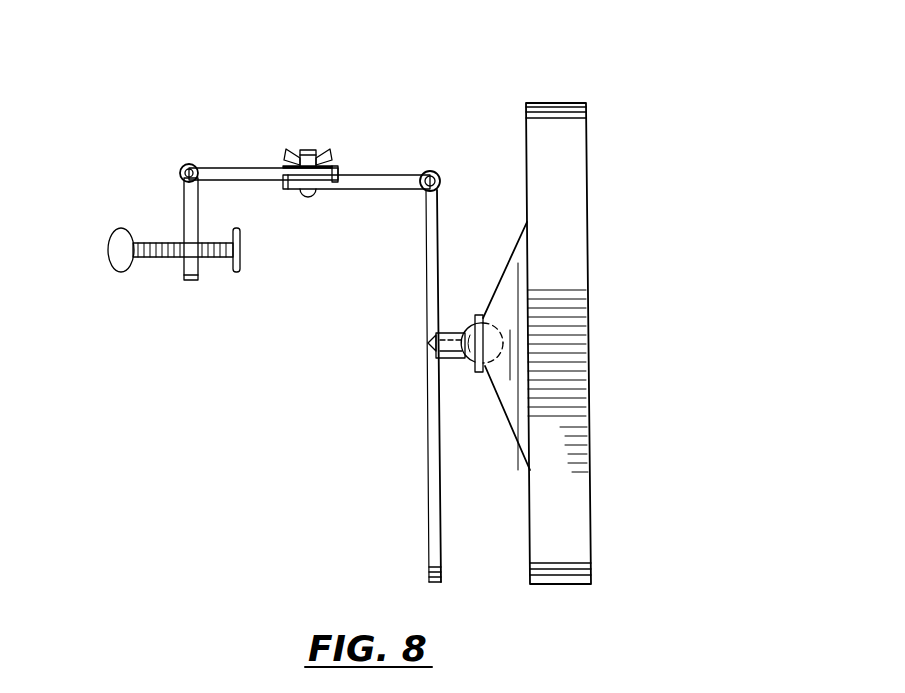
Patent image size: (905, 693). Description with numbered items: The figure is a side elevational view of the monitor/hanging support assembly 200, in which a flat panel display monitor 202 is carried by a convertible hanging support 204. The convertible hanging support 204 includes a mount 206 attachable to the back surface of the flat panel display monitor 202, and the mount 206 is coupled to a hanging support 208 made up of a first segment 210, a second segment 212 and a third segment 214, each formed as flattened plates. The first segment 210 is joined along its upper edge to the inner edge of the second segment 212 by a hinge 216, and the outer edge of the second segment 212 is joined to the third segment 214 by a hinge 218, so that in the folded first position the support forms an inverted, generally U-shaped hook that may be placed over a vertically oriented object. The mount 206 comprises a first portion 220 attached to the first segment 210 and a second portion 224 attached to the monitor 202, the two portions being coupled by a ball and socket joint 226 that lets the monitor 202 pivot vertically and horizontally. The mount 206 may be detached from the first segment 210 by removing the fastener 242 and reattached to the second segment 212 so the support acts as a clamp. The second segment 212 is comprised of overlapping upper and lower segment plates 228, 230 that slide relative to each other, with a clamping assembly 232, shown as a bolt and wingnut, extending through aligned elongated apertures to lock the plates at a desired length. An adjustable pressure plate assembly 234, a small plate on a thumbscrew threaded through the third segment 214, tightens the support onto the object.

The monitor/hanging support assembly 200 is at (598, 140).
The flat panel display monitor 202 is at (584, 226).
The convertible hanging support 204 is at (240, 168).
The mount 206 is at (512, 372).
The hanging support 208 is at (432, 500).
The first segment 210 is at (433, 555).
The second segment 212 is at (227, 168).
The third segment 214 is at (188, 210).
The hinge 216 is at (432, 172).
The hinge 218 is at (180, 173).
The first portion 220 is at (453, 335).
The second portion 224 is at (482, 343).
The ball and socket joint 226 is at (470, 363).
The upper segment plate 228 is at (257, 168).
The lower segment plate 230 is at (380, 190).
The clamping assembly 232 is at (321, 152).
The adjustable pressure plate assembly 234 is at (123, 257).
The fastener 242 is at (432, 347).